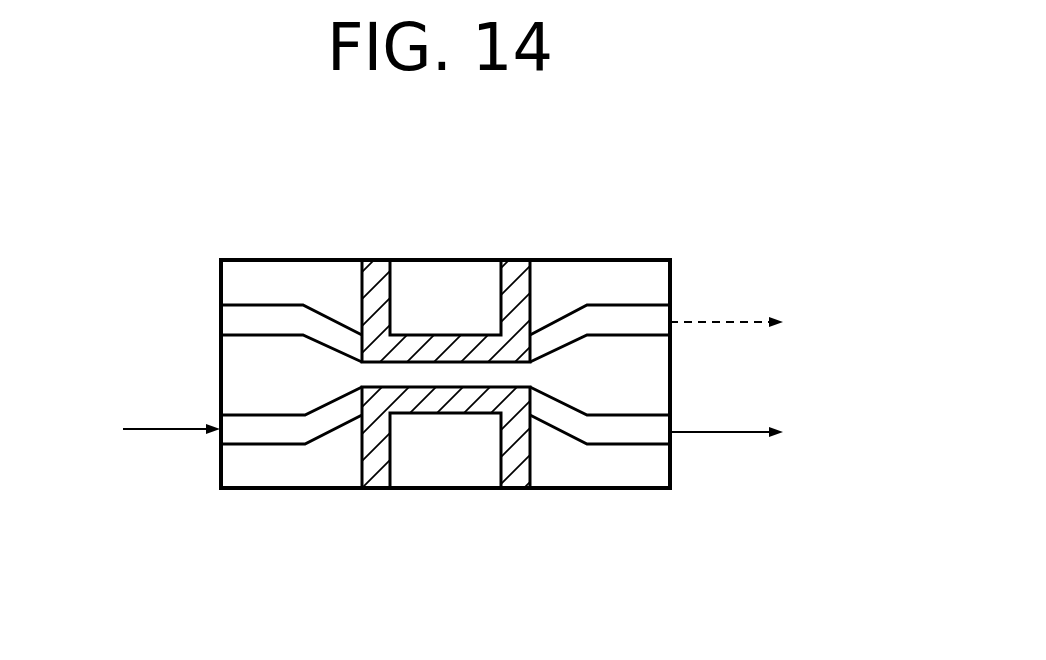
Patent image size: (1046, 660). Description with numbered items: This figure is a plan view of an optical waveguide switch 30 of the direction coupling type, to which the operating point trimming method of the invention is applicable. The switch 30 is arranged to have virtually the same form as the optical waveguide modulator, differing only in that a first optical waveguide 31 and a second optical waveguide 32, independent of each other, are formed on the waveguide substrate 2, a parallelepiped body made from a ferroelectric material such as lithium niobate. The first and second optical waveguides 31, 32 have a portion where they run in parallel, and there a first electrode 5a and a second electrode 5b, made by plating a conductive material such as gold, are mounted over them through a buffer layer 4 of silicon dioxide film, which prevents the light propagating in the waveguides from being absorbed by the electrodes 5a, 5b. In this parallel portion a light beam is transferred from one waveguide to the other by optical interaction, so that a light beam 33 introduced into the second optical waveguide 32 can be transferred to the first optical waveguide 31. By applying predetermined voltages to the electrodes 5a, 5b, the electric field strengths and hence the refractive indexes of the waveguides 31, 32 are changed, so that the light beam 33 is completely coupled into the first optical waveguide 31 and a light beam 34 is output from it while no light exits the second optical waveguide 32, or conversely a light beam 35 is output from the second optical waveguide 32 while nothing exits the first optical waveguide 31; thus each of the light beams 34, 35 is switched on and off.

The waveguide substrate 2 is at (580, 492).
The buffer layer 4 is at (310, 462).
The first electrode 5a is at (417, 340).
The second electrode 5b is at (430, 407).
The optical waveguide switch 30 is at (453, 374).
The first optical waveguide 31 is at (254, 298).
The second optical waveguide 32 is at (258, 452).
The light beam 33 is at (145, 429).
The light beam 34 is at (692, 322).
The light beam 35 is at (703, 433).